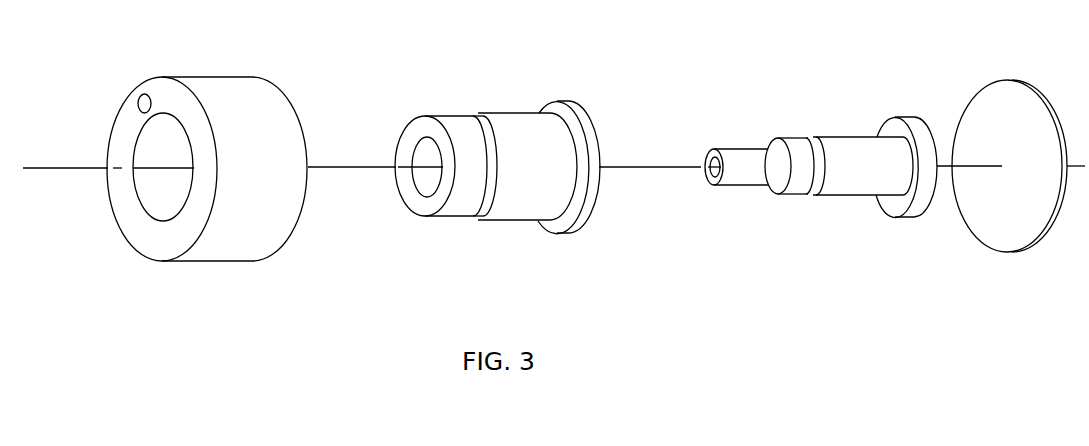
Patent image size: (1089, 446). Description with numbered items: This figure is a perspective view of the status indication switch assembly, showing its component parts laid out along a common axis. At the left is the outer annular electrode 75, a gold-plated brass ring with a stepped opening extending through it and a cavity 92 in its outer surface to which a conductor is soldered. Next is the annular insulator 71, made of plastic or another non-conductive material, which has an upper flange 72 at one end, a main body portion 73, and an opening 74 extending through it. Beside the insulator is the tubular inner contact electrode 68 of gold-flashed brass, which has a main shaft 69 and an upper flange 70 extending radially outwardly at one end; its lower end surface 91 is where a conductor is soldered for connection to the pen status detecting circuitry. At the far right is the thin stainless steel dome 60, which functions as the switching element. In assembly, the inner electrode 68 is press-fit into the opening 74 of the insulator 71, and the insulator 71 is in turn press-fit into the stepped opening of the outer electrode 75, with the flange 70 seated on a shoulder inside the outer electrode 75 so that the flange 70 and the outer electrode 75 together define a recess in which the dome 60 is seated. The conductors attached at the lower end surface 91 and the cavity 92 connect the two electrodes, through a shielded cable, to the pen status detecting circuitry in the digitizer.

The stainless steel dome 60 is at (1000, 112).
The tubular inner contact electrode 68 is at (783, 128).
The main shaft 69 is at (838, 137).
The upper flange 70 is at (934, 124).
The annular insulator 71 is at (458, 111).
The upper flange 72 is at (580, 120).
The main body portion 73 is at (514, 113).
The opening 74 is at (430, 160).
The outer annular electrode 75 is at (234, 71).
The lower end surface 91 is at (710, 150).
The cavity 92 is at (143, 94).